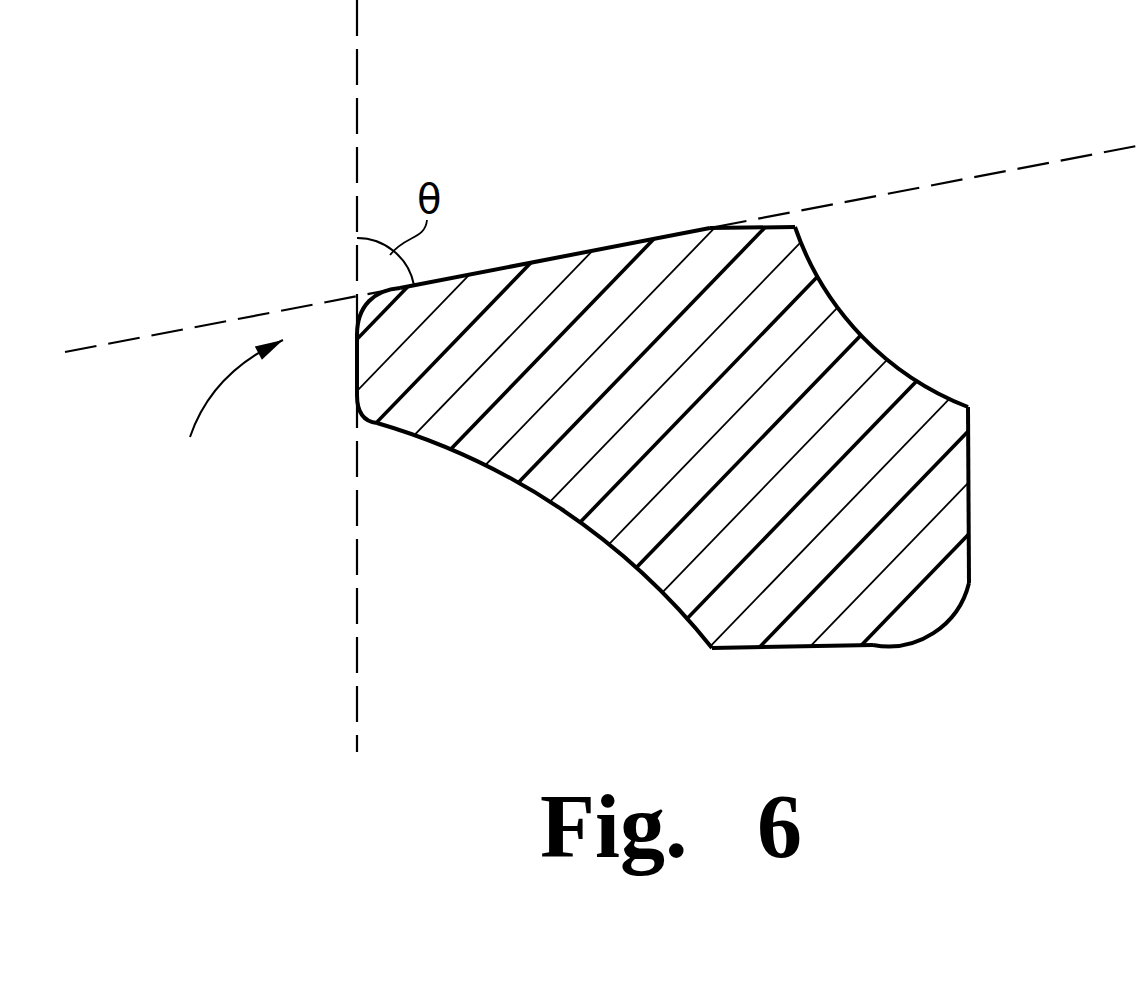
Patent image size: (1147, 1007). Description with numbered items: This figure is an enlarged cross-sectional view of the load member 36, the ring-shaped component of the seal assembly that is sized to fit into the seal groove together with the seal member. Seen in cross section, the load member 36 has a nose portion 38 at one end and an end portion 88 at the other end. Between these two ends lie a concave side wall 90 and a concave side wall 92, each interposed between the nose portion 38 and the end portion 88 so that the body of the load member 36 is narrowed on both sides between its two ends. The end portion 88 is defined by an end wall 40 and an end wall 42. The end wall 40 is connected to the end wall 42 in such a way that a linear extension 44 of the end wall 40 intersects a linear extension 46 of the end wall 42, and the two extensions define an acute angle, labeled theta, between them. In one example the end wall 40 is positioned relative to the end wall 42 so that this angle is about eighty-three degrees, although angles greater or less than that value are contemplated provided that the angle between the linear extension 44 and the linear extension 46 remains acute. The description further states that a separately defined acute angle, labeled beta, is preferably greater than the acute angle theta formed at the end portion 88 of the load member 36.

The load member 36 is at (680, 600).
The nose portion 38 is at (902, 782).
The end wall 40 is at (357, 373).
The end wall 42 is at (645, 240).
The linear extension 44 is at (302, 602).
The linear extension 46 is at (848, 203).
The end portion 88 is at (222, 419).
The concave side wall 90 is at (927, 310).
The concave side wall 92 is at (505, 543).